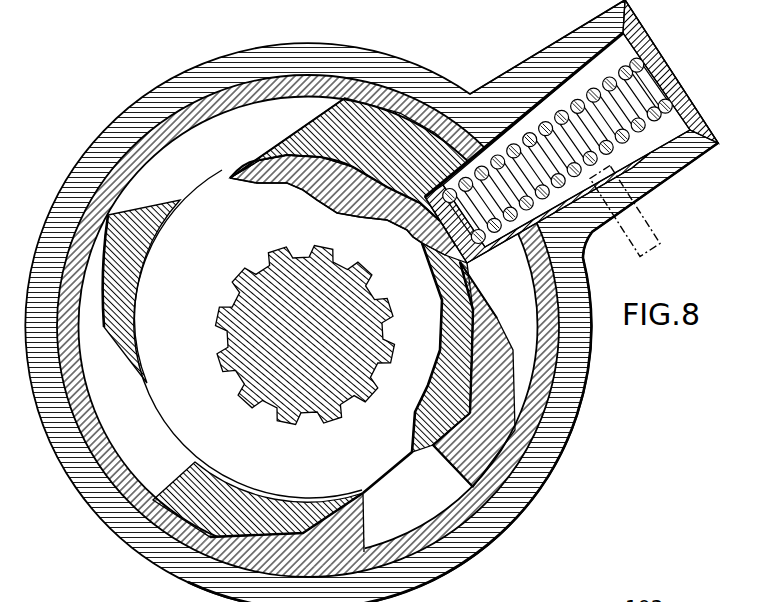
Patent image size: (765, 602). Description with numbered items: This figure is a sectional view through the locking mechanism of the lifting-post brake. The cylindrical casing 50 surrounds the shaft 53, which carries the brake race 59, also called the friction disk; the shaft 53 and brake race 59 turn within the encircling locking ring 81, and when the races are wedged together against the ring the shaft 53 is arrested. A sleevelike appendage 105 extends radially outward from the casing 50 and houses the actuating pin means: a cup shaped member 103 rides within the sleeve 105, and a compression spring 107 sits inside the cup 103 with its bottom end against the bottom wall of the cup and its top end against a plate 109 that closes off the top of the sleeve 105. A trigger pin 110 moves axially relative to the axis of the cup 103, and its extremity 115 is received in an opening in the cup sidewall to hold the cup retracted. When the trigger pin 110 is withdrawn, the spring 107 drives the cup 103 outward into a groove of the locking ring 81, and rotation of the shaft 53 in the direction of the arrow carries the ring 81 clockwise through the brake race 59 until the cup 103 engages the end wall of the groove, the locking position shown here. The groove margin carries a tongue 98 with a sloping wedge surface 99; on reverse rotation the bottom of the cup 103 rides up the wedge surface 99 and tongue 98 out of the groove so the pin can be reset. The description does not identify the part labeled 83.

The cylindrical casing 50 is at (121, 112).
The shaft 53 is at (345, 318).
The brake race 59 is at (338, 468).
The locking ring 81 is at (552, 477).
The ring segment 83 is at (420, 550).
The tongue 98 is at (514, 393).
The wedge surface 99 is at (498, 313).
The cup shaped member 103 is at (543, 100).
The sleevelike appendage 105 is at (587, 27).
The compression spring 107 is at (650, 115).
The plate 109 is at (663, 50).
The trigger pin 110 is at (645, 238).
The extremity of trigger pin 115 is at (492, 263).